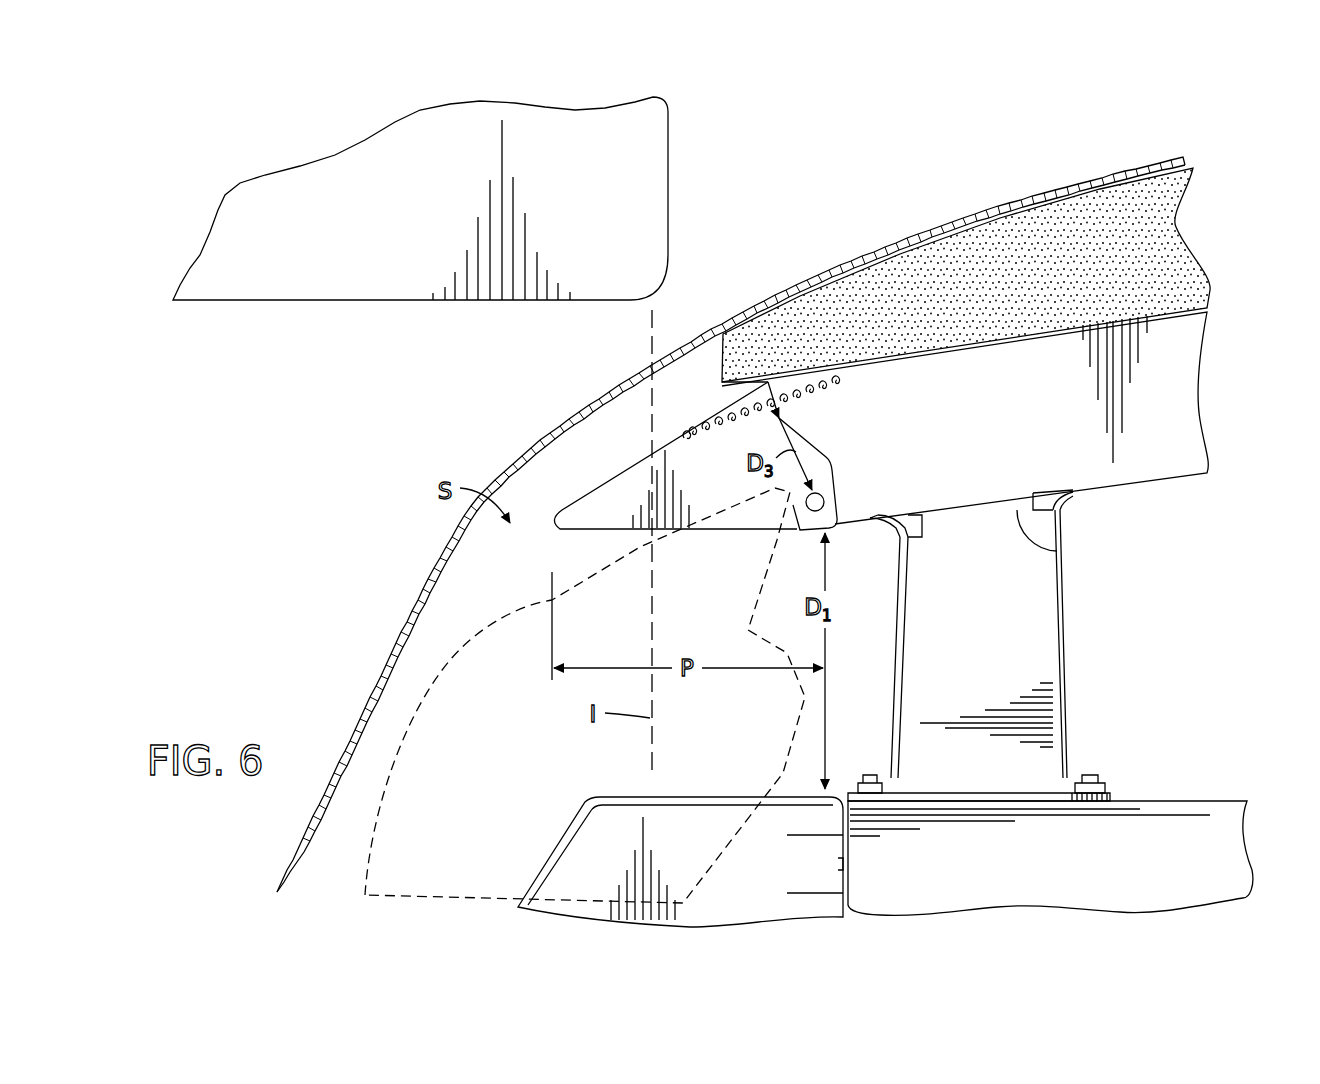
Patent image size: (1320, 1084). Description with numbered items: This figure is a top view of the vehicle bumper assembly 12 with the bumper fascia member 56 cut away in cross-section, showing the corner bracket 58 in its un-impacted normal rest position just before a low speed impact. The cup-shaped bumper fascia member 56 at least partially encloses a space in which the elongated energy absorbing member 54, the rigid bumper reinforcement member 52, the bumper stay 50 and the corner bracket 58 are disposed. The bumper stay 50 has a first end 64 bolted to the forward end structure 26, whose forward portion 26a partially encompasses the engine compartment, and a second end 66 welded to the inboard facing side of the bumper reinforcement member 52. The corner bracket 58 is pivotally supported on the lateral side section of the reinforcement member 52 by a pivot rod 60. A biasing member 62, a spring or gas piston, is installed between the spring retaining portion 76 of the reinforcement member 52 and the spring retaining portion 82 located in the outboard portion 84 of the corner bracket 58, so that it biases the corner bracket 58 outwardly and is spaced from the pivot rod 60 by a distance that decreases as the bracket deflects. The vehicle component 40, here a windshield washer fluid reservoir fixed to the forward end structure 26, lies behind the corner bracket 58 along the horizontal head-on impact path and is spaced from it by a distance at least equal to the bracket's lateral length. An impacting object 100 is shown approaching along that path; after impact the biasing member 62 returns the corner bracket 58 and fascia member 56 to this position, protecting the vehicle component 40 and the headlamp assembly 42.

The impacting object 100 is at (645, 208).
The vehicle bumper assembly 12 is at (1075, 110).
The bumper fascia member 56 is at (1147, 160).
The elongated energy absorbing member 54 is at (1150, 250).
The rigid bumper reinforcement member 52 is at (1165, 380).
The biasing member 62 is at (717, 408).
The spring retaining portion 76 is at (850, 392).
The outboard portion 84 is at (630, 493).
The spring retaining portion 82 is at (692, 437).
The pivot rod 60 is at (824, 500).
The corner bracket 58 is at (597, 520).
The headlamp assembly 42 is at (532, 618).
The vehicle component 40 is at (684, 818).
The bumper stay 50 is at (1020, 637).
The second end 66 is at (1058, 538).
The first end 64 is at (1037, 768).
The forward end structure 26 is at (1133, 788).
The forward portion 26a is at (1178, 833).